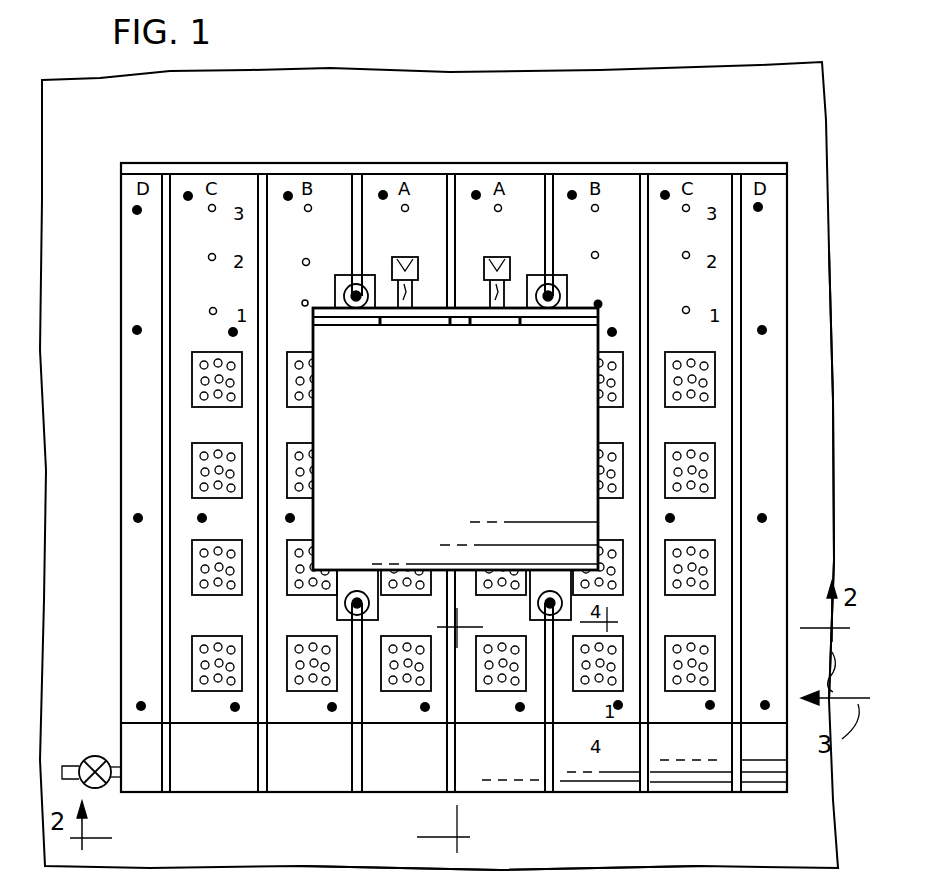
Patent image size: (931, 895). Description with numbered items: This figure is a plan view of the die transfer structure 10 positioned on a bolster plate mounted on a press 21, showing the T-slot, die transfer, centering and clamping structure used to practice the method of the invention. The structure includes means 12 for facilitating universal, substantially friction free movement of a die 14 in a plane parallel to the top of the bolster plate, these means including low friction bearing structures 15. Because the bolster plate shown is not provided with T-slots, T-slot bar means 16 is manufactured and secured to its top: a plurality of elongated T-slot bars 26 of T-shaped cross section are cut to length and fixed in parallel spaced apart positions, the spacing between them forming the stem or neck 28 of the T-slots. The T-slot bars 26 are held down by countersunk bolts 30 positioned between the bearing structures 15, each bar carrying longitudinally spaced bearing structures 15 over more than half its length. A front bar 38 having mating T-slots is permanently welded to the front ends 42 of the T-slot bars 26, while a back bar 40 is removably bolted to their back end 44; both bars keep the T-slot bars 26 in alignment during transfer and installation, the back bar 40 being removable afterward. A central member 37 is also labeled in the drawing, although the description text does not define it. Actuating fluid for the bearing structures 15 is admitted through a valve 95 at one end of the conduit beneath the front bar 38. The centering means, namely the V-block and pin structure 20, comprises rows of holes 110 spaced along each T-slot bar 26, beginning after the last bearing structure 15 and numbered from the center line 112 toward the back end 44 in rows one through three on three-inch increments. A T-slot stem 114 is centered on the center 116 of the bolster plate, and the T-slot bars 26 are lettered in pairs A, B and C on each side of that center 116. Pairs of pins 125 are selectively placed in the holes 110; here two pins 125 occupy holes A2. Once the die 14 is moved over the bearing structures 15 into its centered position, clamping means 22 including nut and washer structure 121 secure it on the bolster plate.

The die transfer structure 10 is at (668, 124).
The means for facilitating universal, substantially friction free movement 12 is at (670, 441).
The die 14 is at (598, 522).
The bearing structures 15 is at (691, 648).
The T-slot bar means 16 is at (121, 496).
The V-block and pin structure 20 is at (500, 257).
The press 21 is at (796, 847).
The clamping means 22 is at (568, 285).
The T-slot bars 26 is at (707, 186).
The stem or neck of the T-slots 28 is at (454, 150).
The countersunk bolts 30 is at (206, 518).
The center member 37 is at (458, 744).
The front bar 38 is at (668, 794).
The back bar 40 is at (266, 164).
The front ends 42 is at (287, 727).
The back end 44 is at (384, 166).
The valve 95 is at (94, 753).
The holes 110 is at (310, 238).
The center line 112 is at (788, 463).
The T-slot stem 114 is at (453, 190).
The center 116 is at (448, 452).
The nut and washer structure 121 is at (561, 284).
The pins 125 is at (420, 238).